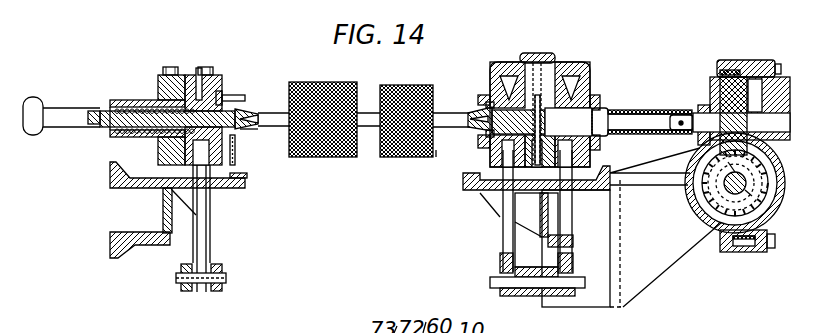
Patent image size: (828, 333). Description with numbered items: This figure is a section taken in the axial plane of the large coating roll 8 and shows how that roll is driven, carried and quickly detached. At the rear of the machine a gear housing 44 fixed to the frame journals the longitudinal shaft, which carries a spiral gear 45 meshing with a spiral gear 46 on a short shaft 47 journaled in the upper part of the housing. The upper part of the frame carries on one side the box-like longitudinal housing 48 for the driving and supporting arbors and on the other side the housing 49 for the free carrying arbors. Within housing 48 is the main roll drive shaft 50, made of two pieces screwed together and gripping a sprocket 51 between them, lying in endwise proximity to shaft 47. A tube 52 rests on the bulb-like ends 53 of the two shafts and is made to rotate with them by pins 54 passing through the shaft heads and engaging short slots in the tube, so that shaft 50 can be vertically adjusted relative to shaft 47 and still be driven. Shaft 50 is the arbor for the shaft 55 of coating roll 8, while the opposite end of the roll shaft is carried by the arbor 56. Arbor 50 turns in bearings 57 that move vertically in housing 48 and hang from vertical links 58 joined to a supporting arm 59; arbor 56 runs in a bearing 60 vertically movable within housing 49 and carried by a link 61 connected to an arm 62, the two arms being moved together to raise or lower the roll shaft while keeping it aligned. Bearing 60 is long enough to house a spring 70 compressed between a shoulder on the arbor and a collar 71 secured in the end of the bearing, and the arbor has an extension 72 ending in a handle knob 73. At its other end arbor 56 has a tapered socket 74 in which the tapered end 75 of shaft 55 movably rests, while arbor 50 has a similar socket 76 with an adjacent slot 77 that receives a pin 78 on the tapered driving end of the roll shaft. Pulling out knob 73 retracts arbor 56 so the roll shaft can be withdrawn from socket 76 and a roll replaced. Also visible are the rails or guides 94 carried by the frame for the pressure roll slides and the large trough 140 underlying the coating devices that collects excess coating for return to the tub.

The large coating roll 8 is at (361, 111).
The gear housing 44 is at (772, 208).
The spiral gear 45 is at (722, 212).
The spiral gear 46 is at (737, 92).
The shaft 47 is at (786, 115).
The longitudinal housing 48 is at (607, 101).
The housing 49 is at (223, 78).
The main roll drive shaft 50 is at (576, 120).
The sprocket 51 is at (541, 63).
The tube 52 is at (653, 110).
The bulb-like ends 53 is at (681, 128).
The pins 54 is at (602, 136).
The shaft of coating roll 55 is at (437, 142).
The arbor 56 is at (252, 130).
The bearings 57 is at (481, 90).
The vertical links 58 is at (504, 240).
The supporting arm 59 is at (528, 296).
The bearing 60 is at (127, 100).
The link 61 is at (208, 232).
The arm 62 is at (214, 292).
The spring 70 is at (152, 100).
The collar 71 is at (106, 109).
The extension 72 is at (67, 109).
The handle knob 73 is at (34, 98).
The chuck 74 is at (255, 118).
The tapered end 75 is at (260, 91).
The socket 76 is at (486, 136).
The slot 77 is at (472, 108).
The pin 78 is at (484, 105).
The rails or guides 94 is at (110, 247).
The trough 140 is at (240, 168).